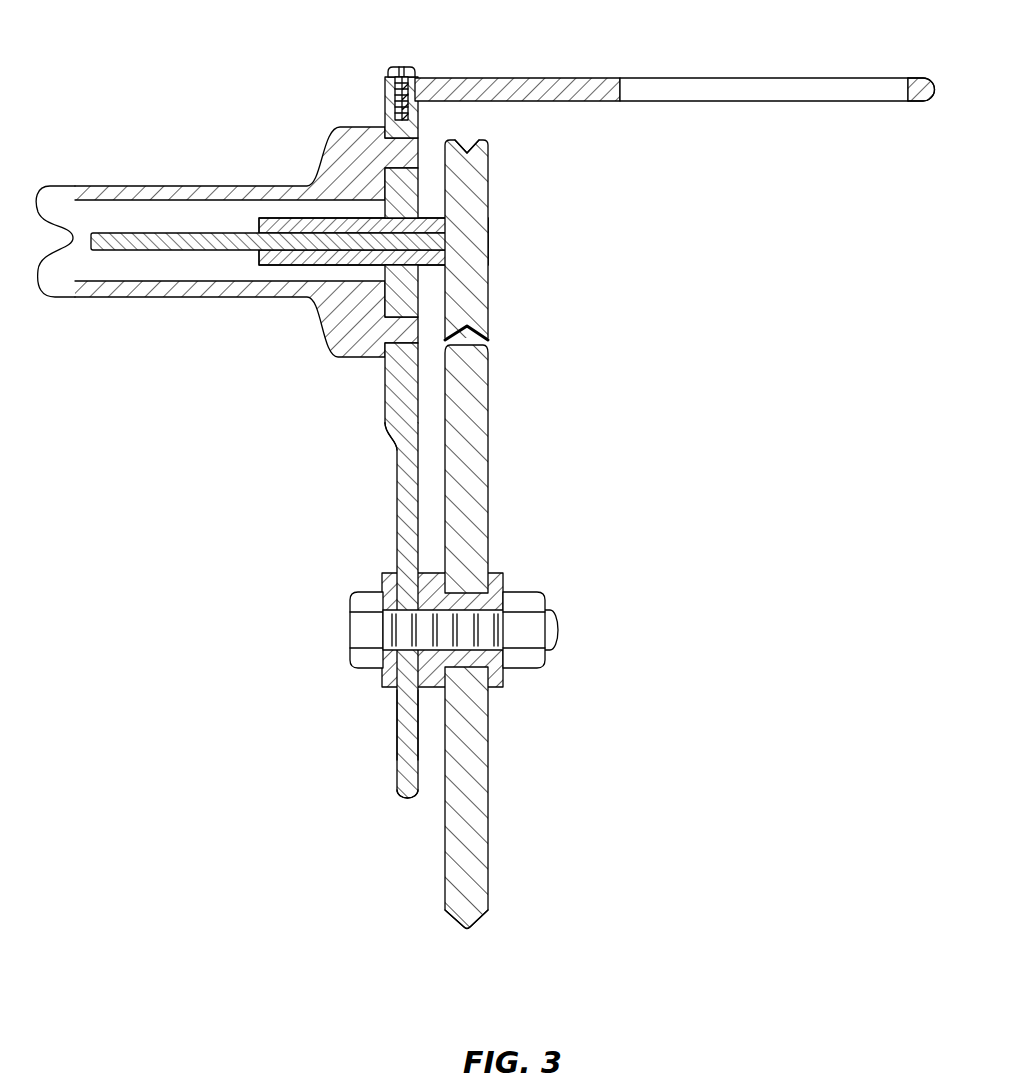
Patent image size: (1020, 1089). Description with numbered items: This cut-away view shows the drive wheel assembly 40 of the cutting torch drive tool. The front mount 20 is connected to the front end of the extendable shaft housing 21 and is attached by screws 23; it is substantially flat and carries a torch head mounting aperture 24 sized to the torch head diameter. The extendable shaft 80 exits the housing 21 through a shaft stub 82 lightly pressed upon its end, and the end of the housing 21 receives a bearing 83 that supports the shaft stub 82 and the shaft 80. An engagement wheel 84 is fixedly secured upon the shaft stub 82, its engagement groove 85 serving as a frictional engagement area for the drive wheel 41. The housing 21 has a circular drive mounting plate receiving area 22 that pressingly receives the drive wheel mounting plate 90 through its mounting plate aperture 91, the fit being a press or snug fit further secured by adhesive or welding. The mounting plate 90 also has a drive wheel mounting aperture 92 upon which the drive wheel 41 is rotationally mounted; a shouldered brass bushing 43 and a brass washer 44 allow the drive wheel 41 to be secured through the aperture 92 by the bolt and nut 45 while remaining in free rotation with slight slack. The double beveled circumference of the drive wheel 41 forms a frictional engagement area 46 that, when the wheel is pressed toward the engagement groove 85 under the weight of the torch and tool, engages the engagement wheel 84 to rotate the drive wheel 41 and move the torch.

The front mount 20 is at (920, 80).
The extendable shaft housing 21 is at (148, 186).
The drive mounting plate receiving area 22 is at (385, 125).
The screws 23 is at (395, 68).
The torch head mounting aperture 24 is at (712, 90).
The mounting assembly 40 is at (318, 695).
The drive wheel 41 is at (488, 388).
The shouldered brass bushing 43 is at (440, 690).
The brass washer 44 is at (502, 573).
The bolt and nut 45 is at (357, 592).
The frictional drive wheel engagement area 46 is at (467, 927).
The extendable shaft 80 is at (165, 250).
The shaft stub 82 is at (282, 265).
The bearing 83 is at (368, 168).
The engagement wheel 84 is at (488, 178).
The engagement groove 85 is at (467, 150).
The drive wheel mounting plate 90 is at (398, 468).
The mounting plate aperture 91 is at (386, 415).
The drive wheel mounting aperture 92 is at (405, 690).